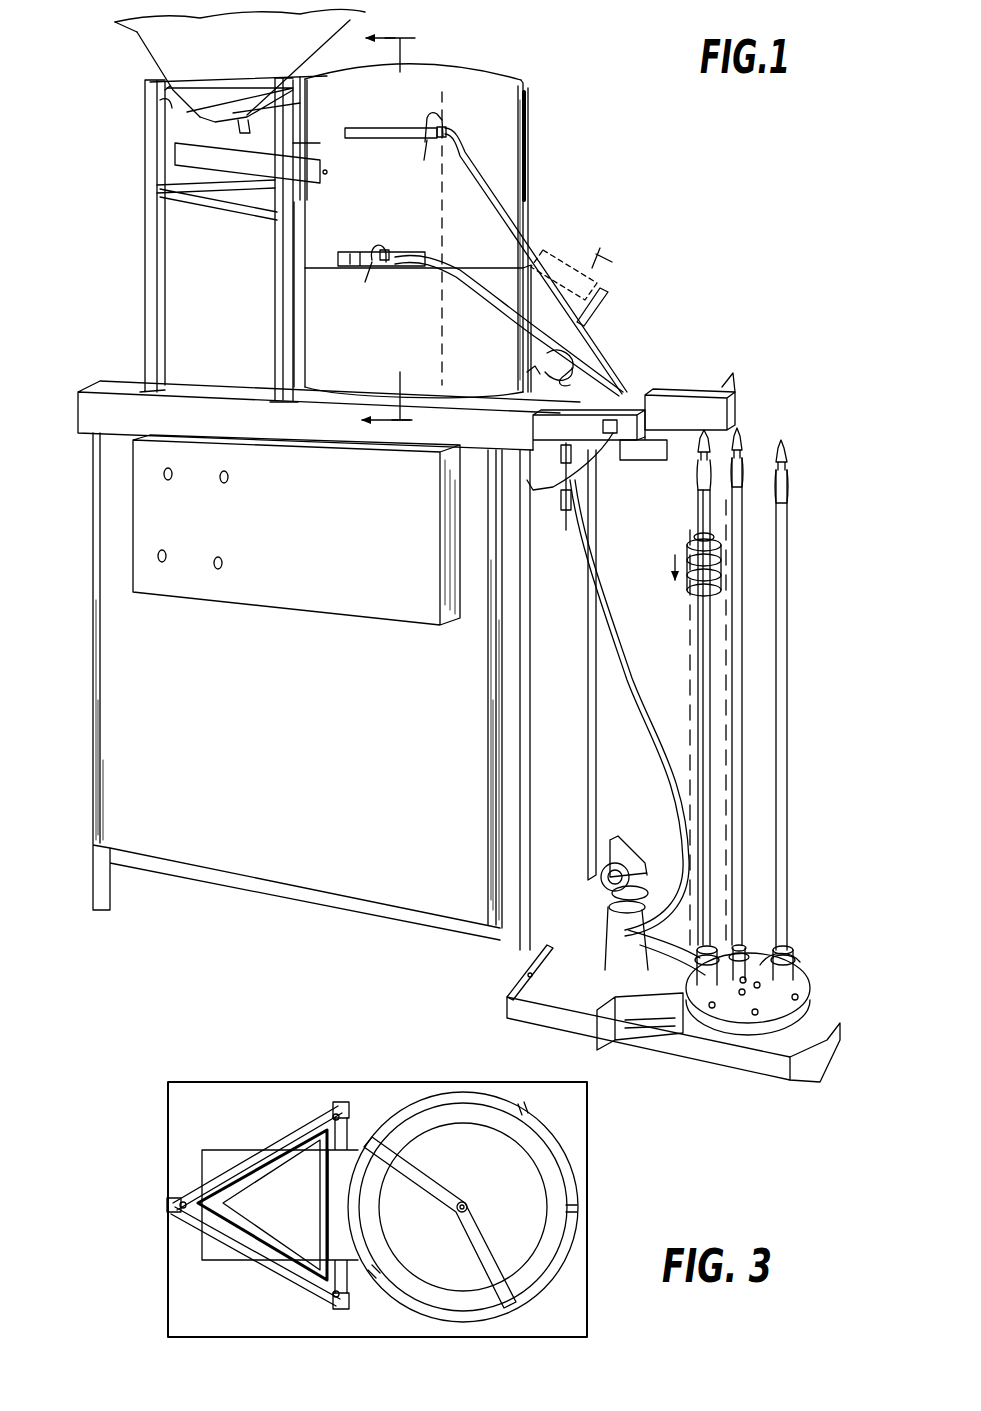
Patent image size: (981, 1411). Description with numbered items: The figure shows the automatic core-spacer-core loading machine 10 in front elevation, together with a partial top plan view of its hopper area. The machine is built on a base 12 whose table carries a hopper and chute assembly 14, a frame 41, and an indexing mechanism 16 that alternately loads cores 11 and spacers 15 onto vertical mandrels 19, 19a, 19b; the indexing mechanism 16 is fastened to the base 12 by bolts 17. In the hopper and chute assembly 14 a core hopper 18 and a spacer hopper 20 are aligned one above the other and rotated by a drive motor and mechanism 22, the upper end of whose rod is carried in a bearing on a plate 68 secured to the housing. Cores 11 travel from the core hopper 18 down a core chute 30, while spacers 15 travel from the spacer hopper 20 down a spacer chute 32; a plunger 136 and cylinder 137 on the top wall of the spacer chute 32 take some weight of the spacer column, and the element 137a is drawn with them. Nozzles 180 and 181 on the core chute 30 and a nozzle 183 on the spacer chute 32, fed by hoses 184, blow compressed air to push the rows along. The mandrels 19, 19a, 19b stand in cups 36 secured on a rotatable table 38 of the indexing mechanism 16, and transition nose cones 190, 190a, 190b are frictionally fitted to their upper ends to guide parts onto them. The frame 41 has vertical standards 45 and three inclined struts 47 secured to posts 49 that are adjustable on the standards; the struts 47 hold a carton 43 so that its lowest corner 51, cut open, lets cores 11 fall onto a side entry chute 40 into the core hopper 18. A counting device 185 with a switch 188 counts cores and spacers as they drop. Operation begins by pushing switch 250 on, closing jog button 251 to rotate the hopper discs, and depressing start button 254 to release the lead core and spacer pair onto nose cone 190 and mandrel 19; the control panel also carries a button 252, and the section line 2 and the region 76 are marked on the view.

In FIG. 1, the section line 2- 2 is at (374, 230).
In FIG. 1, the core-spacer-core loading machine 10 is at (643, 363).
In FIG. 1, the cores 11 is at (689, 590).
In FIG. 1, the base 12 is at (262, 886).
In FIG. 3, the base 12 is at (172, 1117).
In FIG. 1, the hopper and chute assembly 14 is at (445, 231).
In FIG. 3, the hopper and chute assembly 14 is at (578, 1150).
In FIG. 1, the spacers 15 is at (687, 565).
In FIG. 1, the indexing mechanism 16 is at (735, 1078).
In FIG. 1, the bolts 17 is at (510, 1000).
In FIG. 1, the core hopper 18 is at (530, 202).
In FIG. 1, the mandrel 19 is at (671, 687).
In FIG. 1, the mandrel 19a is at (793, 672).
In FIG. 1, the mandrel 19b is at (823, 695).
In FIG. 1, the spacer hopper 20 is at (530, 112).
In FIG. 1, the drive motor and mechanism 22 is at (443, 422).
In FIG. 1, the core chute 30 is at (500, 301).
In FIG. 1, the spacer chute 32 is at (495, 180).
In FIG. 1, the cups 36 is at (810, 960).
In FIG. 1, the rotatable table 38 is at (760, 1020).
In FIG. 1, the side entry chute 40 is at (185, 150).
In FIG. 3, the side entry chute 40 is at (225, 1257).
In FIG. 1, the frame 41 is at (188, 239).
In FIG. 3, the frame 41 is at (249, 1191).
In FIG. 1, the carton 43 is at (128, 32).
In FIG. 1, the vertical standards 45 is at (278, 326).
In FIG. 3, the vertical standards 45 is at (165, 1206).
In FIG. 1, the struts 47 is at (212, 95).
In FIG. 3, the struts 47 is at (285, 1155).
In FIG. 1, the posts 49 is at (165, 106).
In FIG. 3, the posts 49 is at (340, 1105).
In FIG. 1, the corner 51 is at (234, 122).
In FIG. 3, the plate 68 is at (480, 1240).
In FIG. 1, the bowl 76 is at (418, 352).
In FIG. 1, the plunger 136 is at (565, 262).
In FIG. 1, the cylinder 137 is at (597, 295).
In FIG. 1, the pin 137a is at (612, 262).
In FIG. 1, the nozzle 180 is at (395, 252).
In FIG. 1, the nozzle 181 is at (545, 373).
In FIG. 1, the nozzle 183 is at (446, 128).
In FIG. 1, the hoses 184 is at (563, 360).
In FIG. 1, the counting device 185 is at (548, 452).
In FIG. 1, the switch 188 is at (393, 516).
In FIG. 1, the transition nose cone 190 is at (699, 480).
In FIG. 1, the transition nose cone 190a is at (742, 445).
In FIG. 1, the transition nose cone 190b is at (787, 490).
In FIG. 1, the switch 250 is at (163, 472).
In FIG. 1, the jog button 251 is at (228, 476).
In FIG. 1, the off switch 252 is at (158, 552).
In FIG. 1, the start button 254 is at (222, 562).